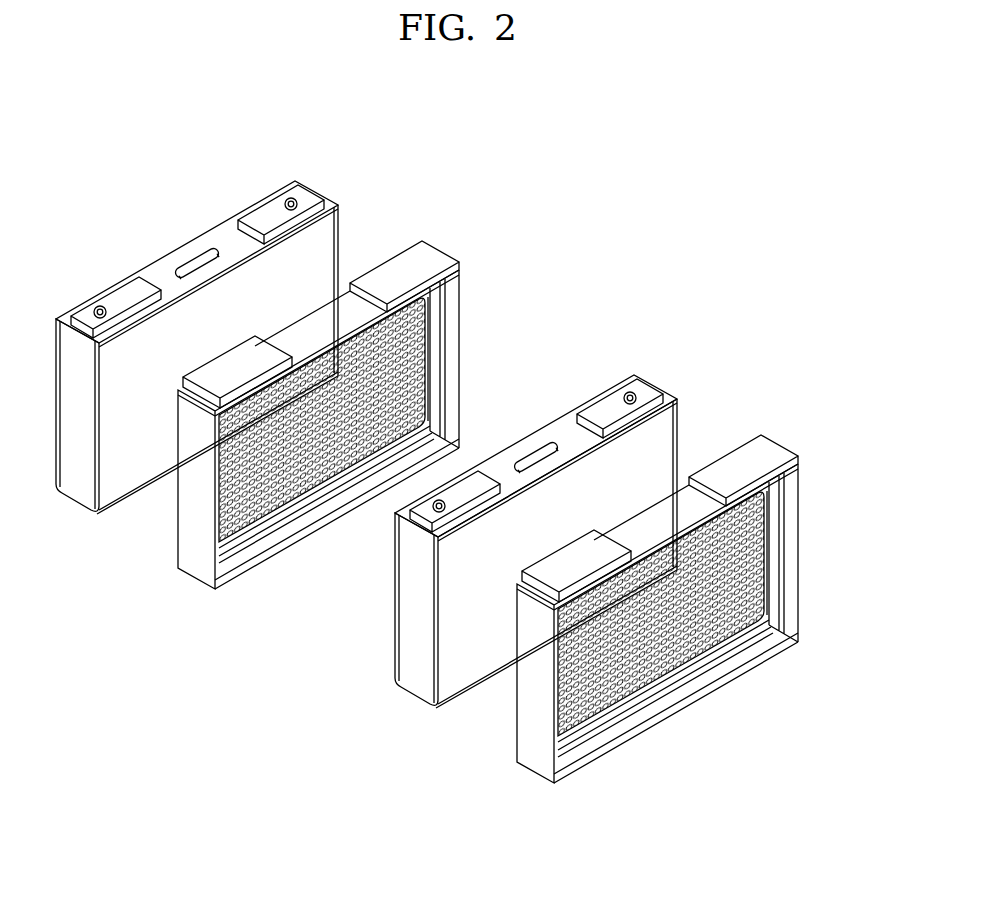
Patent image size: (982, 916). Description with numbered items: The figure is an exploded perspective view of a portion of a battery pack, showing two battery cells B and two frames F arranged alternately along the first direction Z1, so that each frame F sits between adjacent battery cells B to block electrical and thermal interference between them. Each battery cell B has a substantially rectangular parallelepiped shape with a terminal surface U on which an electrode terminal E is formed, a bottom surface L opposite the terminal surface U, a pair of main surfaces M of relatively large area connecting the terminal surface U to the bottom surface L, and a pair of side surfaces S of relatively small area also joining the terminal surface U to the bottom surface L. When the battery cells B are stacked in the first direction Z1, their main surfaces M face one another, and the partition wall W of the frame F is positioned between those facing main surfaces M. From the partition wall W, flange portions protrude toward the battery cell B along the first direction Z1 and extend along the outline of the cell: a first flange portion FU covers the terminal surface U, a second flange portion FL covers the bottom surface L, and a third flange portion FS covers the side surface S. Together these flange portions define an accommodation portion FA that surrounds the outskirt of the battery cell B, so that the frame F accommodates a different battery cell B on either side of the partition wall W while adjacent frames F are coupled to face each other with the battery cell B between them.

The battery cell B is at (398, 441).
The frame F is at (302, 413).
The accommodation portion FA is at (176, 523).
The partition wall W is at (290, 476).
The electrode terminal E is at (536, 431).
The terminal surface U is at (536, 449).
The side surface S is at (541, 552).
The main surface M is at (557, 563).
The bottom surface L is at (556, 666).
The first flange portion FU is at (664, 501).
The third flange portion FS is at (683, 648).
The second flange portion FL is at (676, 701).
The first direction Z1 is at (353, 750).